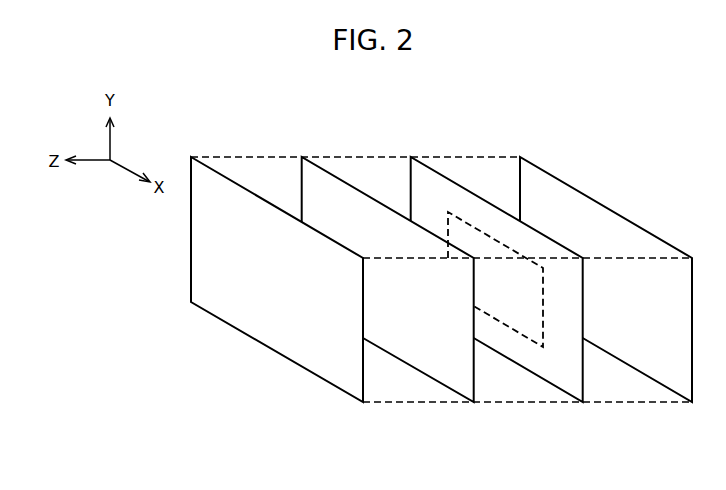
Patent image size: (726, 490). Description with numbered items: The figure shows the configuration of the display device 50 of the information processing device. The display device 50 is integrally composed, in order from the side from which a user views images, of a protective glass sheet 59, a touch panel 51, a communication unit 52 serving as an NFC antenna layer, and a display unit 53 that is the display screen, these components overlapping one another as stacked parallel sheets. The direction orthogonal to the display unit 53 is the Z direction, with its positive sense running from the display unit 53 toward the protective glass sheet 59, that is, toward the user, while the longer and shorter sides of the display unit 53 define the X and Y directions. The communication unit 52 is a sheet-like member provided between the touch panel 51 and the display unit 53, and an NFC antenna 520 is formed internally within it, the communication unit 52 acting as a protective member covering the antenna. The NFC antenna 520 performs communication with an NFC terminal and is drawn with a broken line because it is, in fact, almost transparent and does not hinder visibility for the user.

The display device 50 is at (605, 137).
The protective glass sheet 59 is at (332, 388).
The touch panel 51 is at (440, 388).
The communication unit 52 is at (550, 388).
The NFC antenna 520 is at (503, 326).
The display unit 53 is at (662, 388).